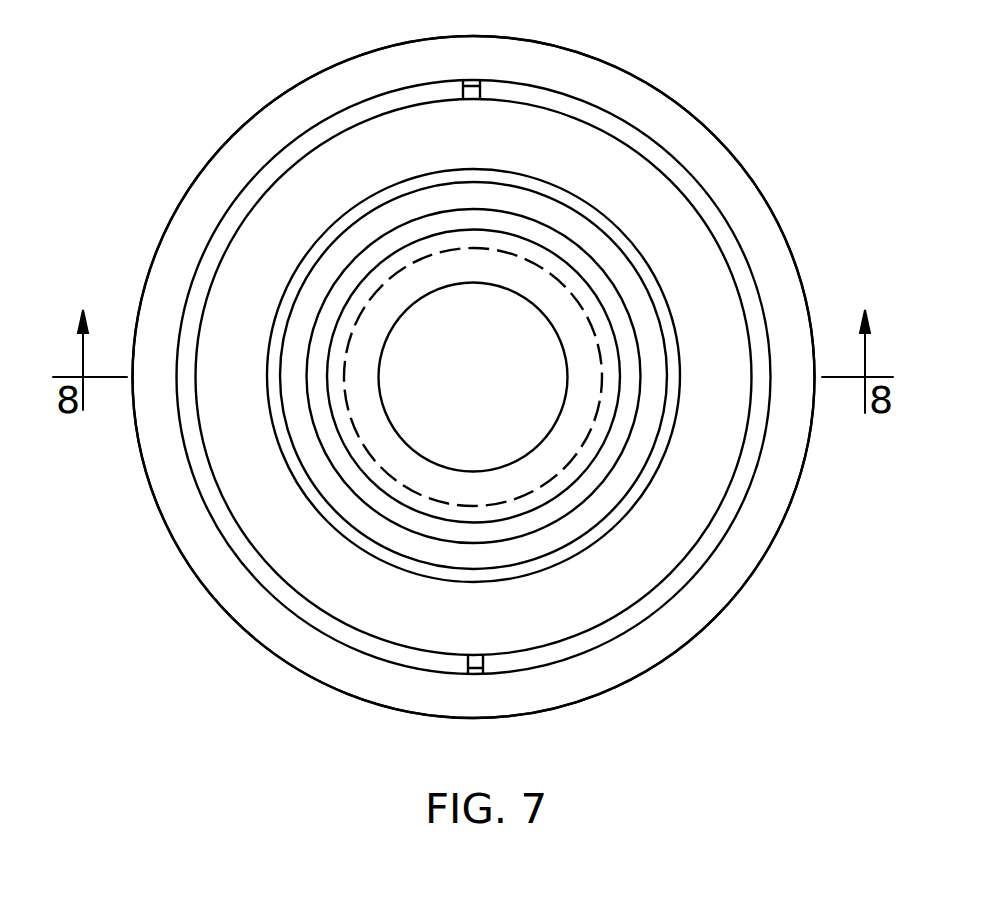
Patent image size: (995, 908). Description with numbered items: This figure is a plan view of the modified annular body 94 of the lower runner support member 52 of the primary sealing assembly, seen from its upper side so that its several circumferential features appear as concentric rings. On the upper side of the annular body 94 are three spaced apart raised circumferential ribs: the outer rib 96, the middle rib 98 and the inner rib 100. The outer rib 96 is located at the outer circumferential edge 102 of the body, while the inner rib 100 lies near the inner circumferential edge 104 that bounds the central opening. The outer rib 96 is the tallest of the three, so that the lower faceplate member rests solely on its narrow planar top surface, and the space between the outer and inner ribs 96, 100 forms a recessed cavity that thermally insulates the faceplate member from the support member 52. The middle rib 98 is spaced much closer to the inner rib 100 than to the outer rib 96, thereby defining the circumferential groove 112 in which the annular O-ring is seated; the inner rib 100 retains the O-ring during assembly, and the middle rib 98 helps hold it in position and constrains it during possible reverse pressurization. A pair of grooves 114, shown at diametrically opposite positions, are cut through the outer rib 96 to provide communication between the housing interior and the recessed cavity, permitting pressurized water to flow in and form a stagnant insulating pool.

The runner support member 52 is at (688, 85).
The annular body 94 is at (720, 129).
The outer rib 96 is at (740, 517).
The middle rib 98 is at (620, 525).
The inner rib 100 is at (618, 442).
The outer circumferential edge 102 is at (748, 260).
The inner circumferential edge 104 is at (537, 305).
The circumferential groove 112 is at (653, 340).
The grooves 114 is at (463, 87).